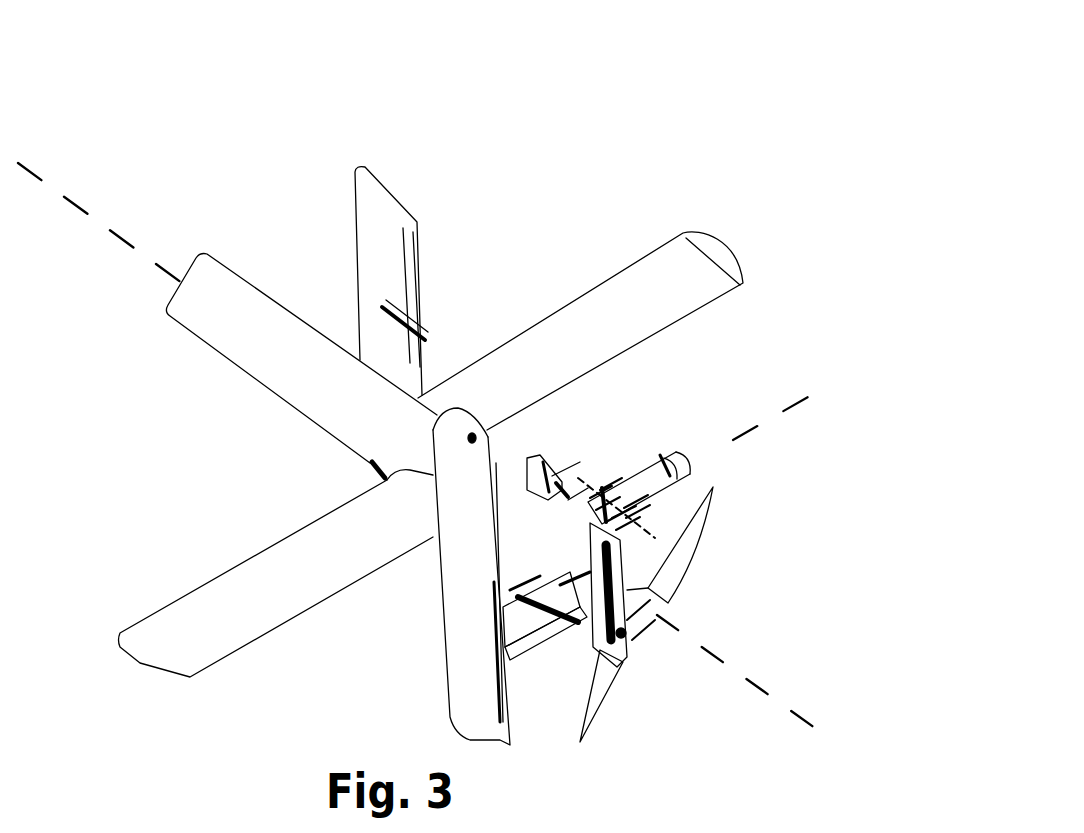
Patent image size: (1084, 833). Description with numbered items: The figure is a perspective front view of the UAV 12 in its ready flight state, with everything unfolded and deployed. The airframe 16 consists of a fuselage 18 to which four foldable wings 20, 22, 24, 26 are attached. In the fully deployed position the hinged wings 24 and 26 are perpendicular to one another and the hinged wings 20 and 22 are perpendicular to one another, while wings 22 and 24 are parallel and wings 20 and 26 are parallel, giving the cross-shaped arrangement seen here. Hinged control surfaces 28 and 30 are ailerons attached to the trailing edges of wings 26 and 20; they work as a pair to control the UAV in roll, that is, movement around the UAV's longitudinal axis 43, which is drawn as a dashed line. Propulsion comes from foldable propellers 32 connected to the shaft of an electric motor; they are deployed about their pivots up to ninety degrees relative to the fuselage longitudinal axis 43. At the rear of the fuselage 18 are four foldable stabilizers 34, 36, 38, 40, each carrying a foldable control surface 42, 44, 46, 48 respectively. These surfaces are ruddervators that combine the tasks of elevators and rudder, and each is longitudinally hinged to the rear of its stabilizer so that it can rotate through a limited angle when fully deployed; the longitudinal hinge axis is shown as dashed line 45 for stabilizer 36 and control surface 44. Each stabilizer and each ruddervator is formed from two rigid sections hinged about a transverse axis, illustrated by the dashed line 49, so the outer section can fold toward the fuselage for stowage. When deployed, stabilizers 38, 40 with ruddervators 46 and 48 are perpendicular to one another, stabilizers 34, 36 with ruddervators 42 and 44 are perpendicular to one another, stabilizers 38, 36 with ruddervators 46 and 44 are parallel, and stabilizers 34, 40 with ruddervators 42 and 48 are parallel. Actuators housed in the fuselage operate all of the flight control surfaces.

The rotor assembly 12 is at (648, 83).
The airframe 16 is at (167, 169).
The fuselage 18 is at (245, 372).
The foldable wing 20 is at (355, 225).
The foldable wing 22 is at (652, 252).
The foldable wing 24 is at (197, 587).
The foldable wing 26 is at (447, 677).
The control surface 28 is at (420, 300).
The control surface 30 is at (507, 687).
The foldable propellers 32 is at (700, 553).
The foldable stabilizer 34 is at (537, 460).
The foldable stabilizer 36 is at (633, 477).
The foldable stabilizer 38 is at (537, 580).
The foldable stabilizer 40 is at (600, 647).
The foldable control surface 42 is at (560, 487).
The longitudinal axis 43 is at (747, 680).
The foldable control surface 44 is at (683, 470).
The longitudinal axis 45 is at (758, 425).
The foldable control surface 46 is at (528, 637).
The foldable control surface 48 is at (620, 632).
The transverse axis 49 is at (590, 487).